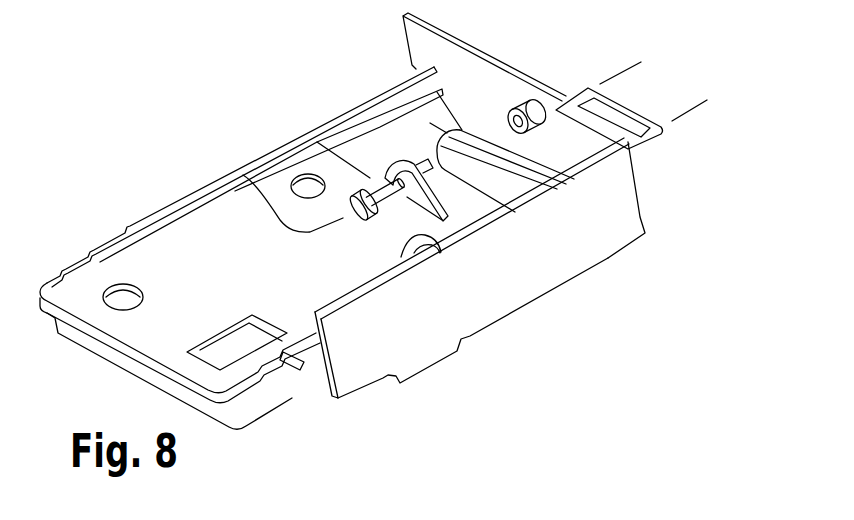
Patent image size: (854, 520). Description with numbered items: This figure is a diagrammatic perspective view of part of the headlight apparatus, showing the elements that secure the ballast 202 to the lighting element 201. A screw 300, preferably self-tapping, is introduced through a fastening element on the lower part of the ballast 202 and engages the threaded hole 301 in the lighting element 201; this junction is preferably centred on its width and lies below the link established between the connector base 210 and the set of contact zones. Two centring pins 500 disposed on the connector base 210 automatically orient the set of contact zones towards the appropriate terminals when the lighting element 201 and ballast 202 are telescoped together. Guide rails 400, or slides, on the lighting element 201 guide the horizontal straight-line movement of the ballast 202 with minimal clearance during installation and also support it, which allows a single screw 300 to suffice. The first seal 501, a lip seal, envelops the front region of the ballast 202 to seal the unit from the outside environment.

The lighting element 201 is at (505, 277).
The ballast 202 is at (152, 329).
The connector base 210 is at (638, 95).
The screw 300 is at (243, 175).
The threaded hole 301 is at (529, 101).
The guide rails 400 is at (368, 115).
The centring pins 500 is at (636, 140).
The first seal 501 is at (535, 182).